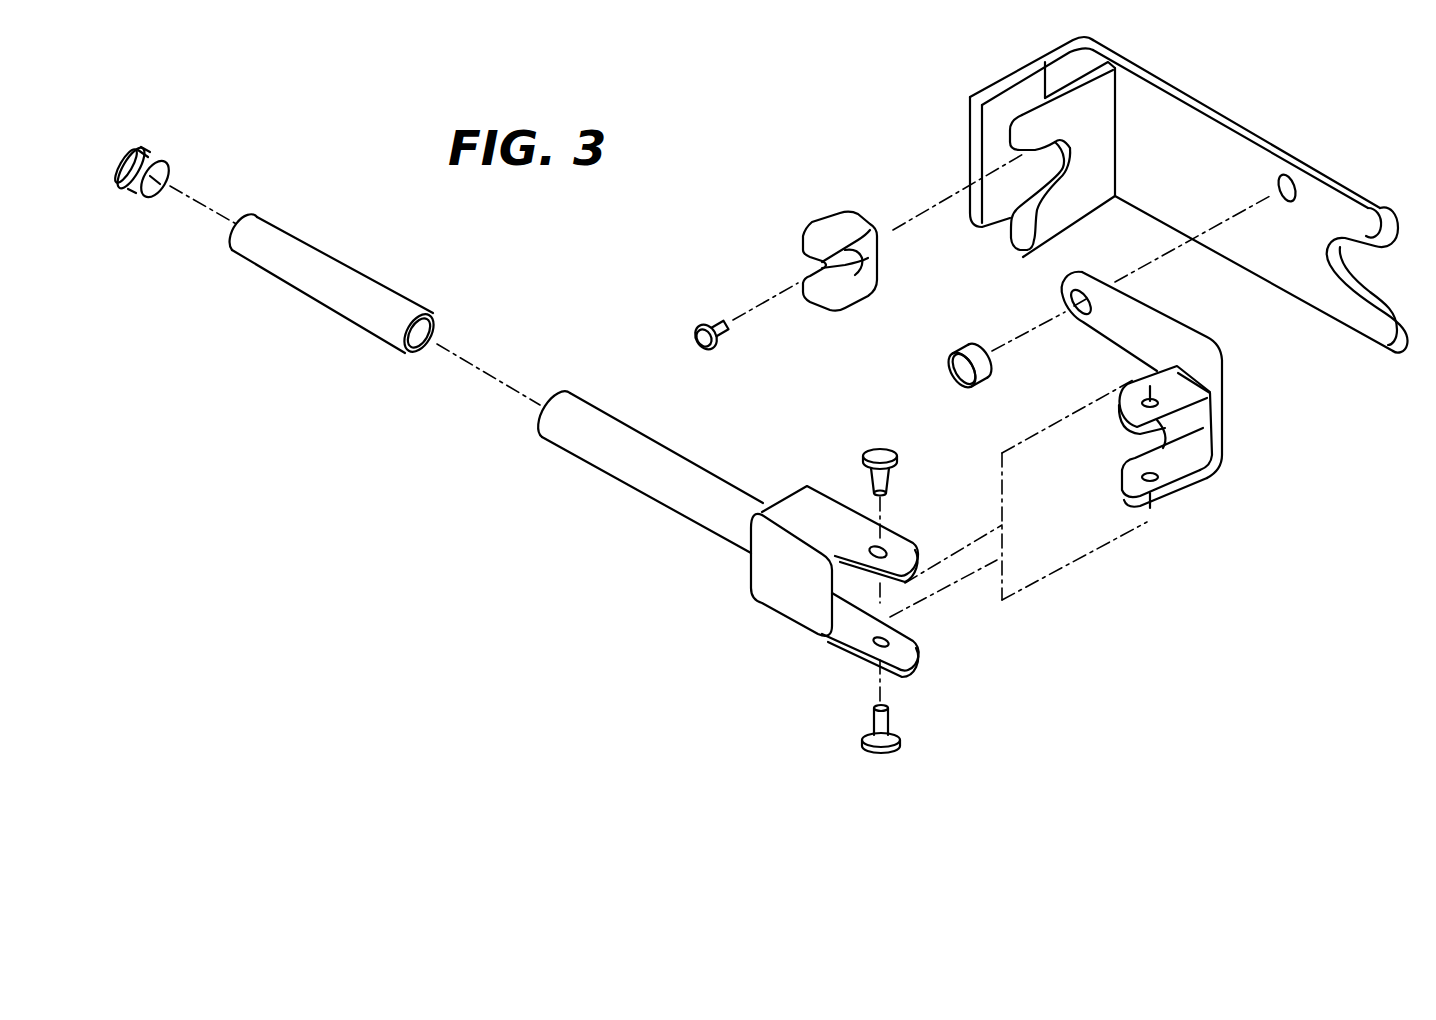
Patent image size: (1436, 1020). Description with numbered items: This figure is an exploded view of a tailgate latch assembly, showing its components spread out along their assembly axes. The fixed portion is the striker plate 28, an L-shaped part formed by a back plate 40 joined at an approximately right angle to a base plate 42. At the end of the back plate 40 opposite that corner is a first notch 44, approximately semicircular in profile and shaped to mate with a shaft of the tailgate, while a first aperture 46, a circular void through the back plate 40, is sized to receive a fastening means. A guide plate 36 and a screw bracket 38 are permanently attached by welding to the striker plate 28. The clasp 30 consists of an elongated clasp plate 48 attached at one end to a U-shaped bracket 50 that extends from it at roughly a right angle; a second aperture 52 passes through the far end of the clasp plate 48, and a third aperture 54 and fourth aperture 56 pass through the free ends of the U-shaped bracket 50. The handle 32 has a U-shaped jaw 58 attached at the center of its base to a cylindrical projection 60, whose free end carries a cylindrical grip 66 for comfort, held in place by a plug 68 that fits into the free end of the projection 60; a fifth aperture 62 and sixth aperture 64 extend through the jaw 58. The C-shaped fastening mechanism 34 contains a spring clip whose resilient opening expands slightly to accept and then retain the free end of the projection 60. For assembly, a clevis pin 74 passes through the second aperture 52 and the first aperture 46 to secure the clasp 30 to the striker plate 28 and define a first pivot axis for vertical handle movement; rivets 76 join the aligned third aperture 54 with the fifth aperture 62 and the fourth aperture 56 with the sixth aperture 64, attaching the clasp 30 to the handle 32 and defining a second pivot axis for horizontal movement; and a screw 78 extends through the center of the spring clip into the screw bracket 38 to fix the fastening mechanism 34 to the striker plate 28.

The striker plate 28 is at (1254, 112).
The clasp 30 is at (1243, 408).
The handle 32 is at (639, 516).
The fastening mechanism 34 is at (813, 226).
The guide plate 36 is at (1097, 193).
The screw bracket 38 is at (1083, 62).
The back plate 40 is at (1213, 157).
The base plate 42 is at (993, 115).
The first notch 44 is at (1367, 217).
The first aperture 46 is at (1292, 178).
The clasp plate 48 is at (1150, 315).
The U-shaped bracket 50 is at (1195, 484).
The second aperture 52 is at (1085, 315).
The third aperture 54 is at (1147, 403).
The fourth aperture 56 is at (1155, 482).
The jaw 58 is at (801, 500).
The projection 60 is at (685, 473).
The fifth aperture 62 is at (882, 550).
The sixth aperture 64 is at (884, 647).
The grip 66 is at (333, 247).
The plug 68 is at (167, 170).
The clevis pin 74 is at (980, 357).
The rivets 76 is at (878, 452).
The screw 78 is at (714, 324).